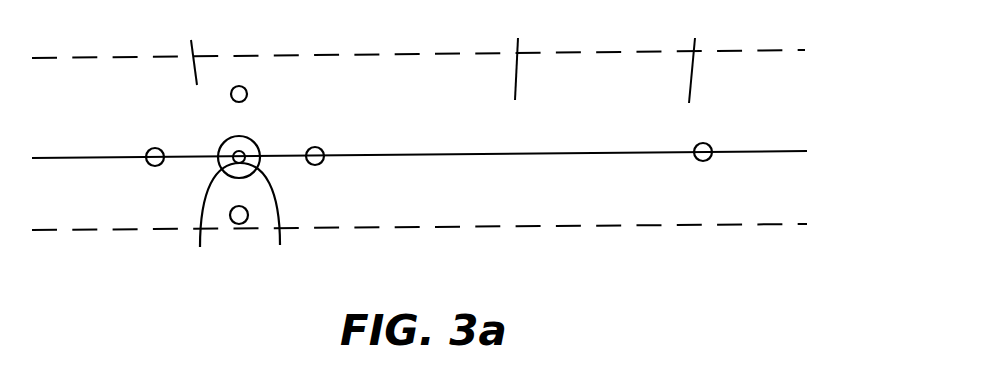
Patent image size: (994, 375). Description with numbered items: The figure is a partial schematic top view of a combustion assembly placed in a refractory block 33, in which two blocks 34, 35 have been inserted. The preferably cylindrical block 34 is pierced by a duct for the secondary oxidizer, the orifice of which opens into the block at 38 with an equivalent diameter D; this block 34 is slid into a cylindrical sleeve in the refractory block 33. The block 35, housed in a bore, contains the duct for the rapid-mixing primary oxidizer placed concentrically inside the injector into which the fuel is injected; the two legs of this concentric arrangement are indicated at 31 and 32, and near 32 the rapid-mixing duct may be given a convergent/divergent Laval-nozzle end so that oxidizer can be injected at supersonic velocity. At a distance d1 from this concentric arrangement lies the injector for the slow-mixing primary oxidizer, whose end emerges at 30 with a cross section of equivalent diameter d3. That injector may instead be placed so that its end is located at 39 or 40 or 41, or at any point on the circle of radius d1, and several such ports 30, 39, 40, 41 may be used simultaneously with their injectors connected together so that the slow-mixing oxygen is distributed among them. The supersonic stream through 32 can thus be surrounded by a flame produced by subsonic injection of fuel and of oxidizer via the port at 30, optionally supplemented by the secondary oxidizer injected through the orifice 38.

The end of injector 30 is at (316, 165).
The first arm 31 is at (215, 217).
The end of injector 32 is at (267, 217).
The refractory block 33 is at (519, 58).
The cylindrical block 34 is at (694, 58).
The block 35 is at (192, 51).
The orifice of duct 38 is at (704, 161).
The alternative port location 39 is at (242, 224).
The alternative port location 40 is at (153, 166).
The alternative port location 41 is at (246, 89).